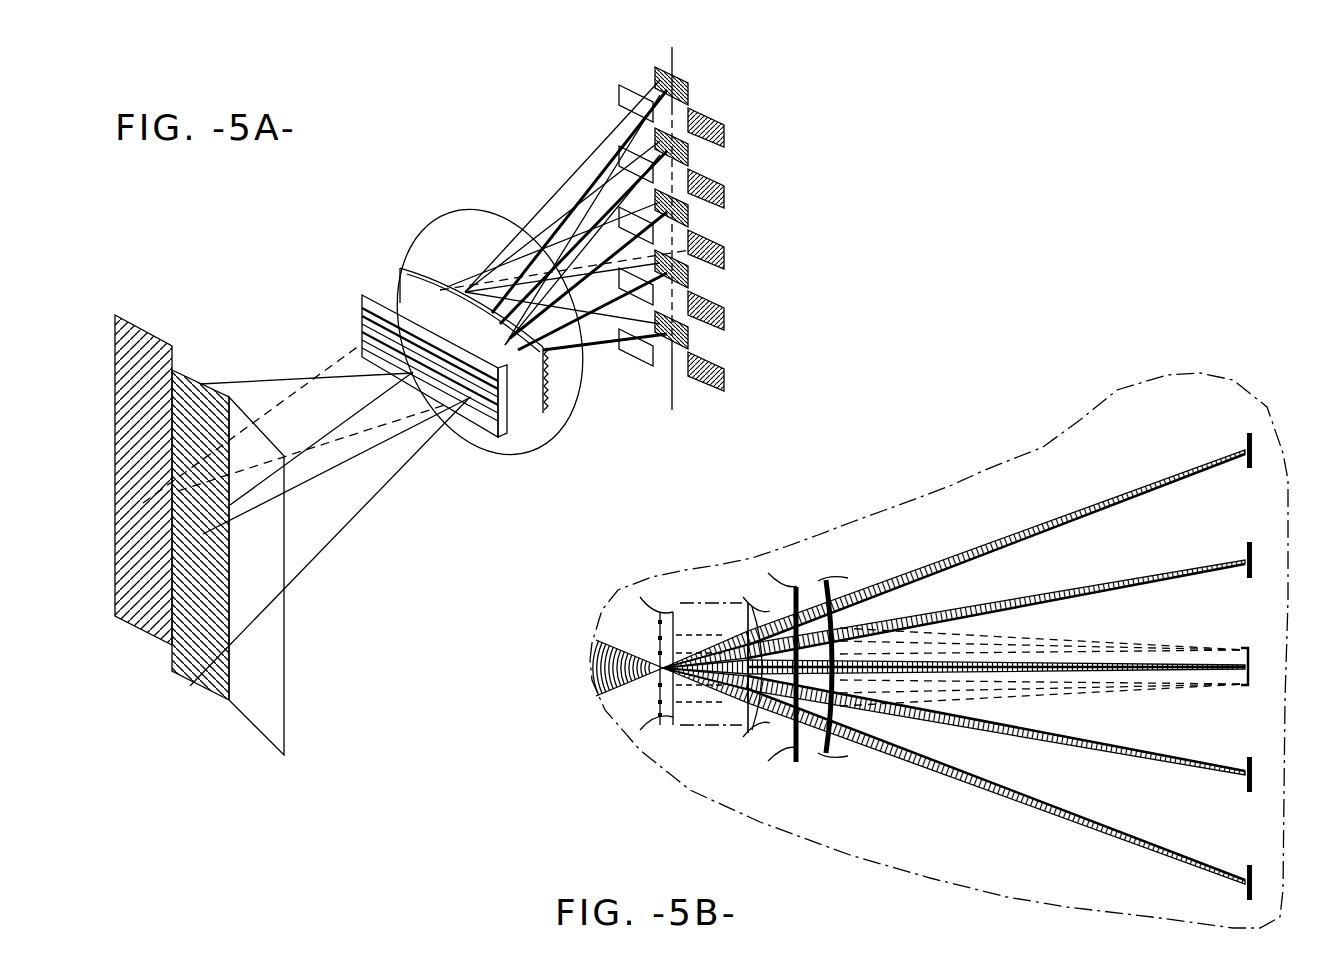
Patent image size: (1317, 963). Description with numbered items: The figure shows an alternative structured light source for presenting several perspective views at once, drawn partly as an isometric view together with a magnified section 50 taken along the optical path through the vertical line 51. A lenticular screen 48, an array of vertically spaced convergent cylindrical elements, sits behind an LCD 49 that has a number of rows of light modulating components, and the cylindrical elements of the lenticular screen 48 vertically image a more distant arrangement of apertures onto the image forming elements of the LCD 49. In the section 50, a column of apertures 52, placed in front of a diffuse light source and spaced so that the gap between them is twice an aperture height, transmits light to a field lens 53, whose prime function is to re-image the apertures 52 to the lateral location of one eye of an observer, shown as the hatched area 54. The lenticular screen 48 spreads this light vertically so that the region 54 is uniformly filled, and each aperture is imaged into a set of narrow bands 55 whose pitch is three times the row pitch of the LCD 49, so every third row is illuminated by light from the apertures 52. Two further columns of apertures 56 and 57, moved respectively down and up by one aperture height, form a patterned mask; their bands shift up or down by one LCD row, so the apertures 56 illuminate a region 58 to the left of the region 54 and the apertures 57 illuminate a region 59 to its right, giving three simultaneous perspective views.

In FIG. 5A, the lenticular screen 48 is at (402, 263).
In FIG. 5B, the lenticular screen 48 is at (753, 720).
In FIG. 5A, the LCD 49 is at (367, 293).
In FIG. 5B, the LCD 49 is at (665, 727).
In FIG. 5B, the magnified section 50 is at (1005, 460).
In FIG. 5A, the vertical line 51 is at (668, 388).
In FIG. 5A, the apertures 52 is at (663, 83).
In FIG. 5B, the apertures 52 is at (1247, 470).
In FIG. 5A, the field lens 53 is at (470, 225).
In FIG. 5B, the field lens 53 is at (815, 745).
In FIG. 5A, the hatched area 54 is at (190, 400).
In FIG. 5B, the narrow bands 55 is at (660, 661).
In FIG. 5A, the column of apertures 56 is at (724, 190).
In FIG. 5A, the column of apertures 57 is at (630, 157).
In FIG. 5A, the region 58 is at (149, 350).
In FIG. 5A, the region 59 is at (272, 720).